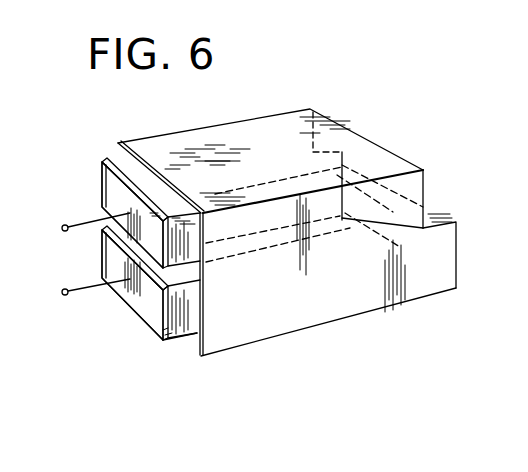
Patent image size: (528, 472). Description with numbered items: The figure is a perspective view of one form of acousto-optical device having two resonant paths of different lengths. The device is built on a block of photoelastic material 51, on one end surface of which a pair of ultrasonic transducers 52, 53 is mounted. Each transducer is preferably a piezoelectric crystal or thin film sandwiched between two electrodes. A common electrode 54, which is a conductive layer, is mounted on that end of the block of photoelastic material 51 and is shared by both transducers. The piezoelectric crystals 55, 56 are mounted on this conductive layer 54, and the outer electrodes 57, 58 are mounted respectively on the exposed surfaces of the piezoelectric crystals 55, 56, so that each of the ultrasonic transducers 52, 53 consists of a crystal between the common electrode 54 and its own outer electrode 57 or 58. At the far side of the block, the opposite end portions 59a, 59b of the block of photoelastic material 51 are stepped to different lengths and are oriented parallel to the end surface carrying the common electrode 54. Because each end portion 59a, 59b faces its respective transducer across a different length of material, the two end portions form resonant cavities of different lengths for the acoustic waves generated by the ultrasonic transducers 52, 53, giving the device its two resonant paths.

The block of photoelastic material 51 is at (260, 125).
The ultrasonic transducer 52 is at (110, 203).
The ultrasonic transducer 53 is at (97, 257).
The common electrode 54 is at (204, 290).
The piezoelectric crystal 55 is at (116, 157).
The piezoelectric crystal 56 is at (172, 343).
The electrode 57 is at (102, 184).
The electrode 58 is at (143, 303).
The end portion 59a is at (426, 182).
The end portion 59b is at (457, 268).